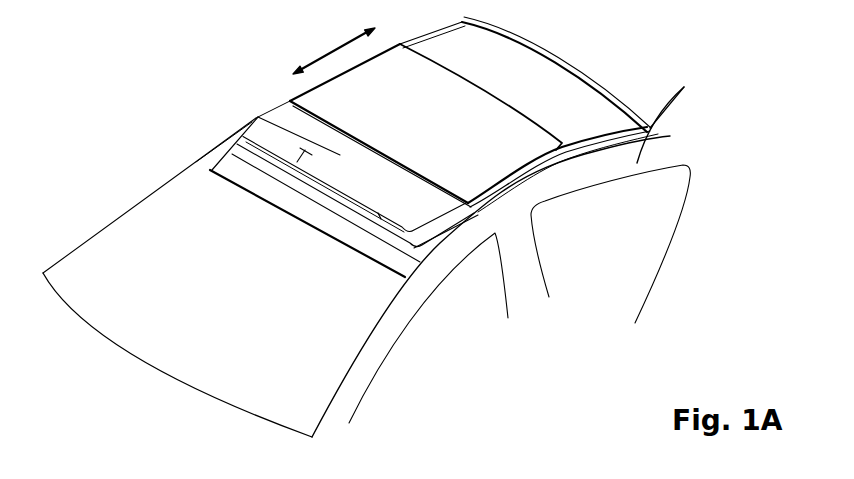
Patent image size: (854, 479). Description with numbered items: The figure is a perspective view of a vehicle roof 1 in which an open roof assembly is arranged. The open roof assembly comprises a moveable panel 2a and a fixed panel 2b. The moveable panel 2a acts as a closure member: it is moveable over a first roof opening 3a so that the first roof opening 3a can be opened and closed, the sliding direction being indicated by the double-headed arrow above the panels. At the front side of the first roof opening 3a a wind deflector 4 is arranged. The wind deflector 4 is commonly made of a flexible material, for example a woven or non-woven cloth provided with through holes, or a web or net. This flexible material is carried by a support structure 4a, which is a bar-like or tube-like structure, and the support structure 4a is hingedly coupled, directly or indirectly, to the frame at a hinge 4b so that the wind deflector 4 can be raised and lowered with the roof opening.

The vehicle roof 1 is at (686, 87).
The moveable panel 2a is at (440, 117).
The fixed panel 2b is at (549, 87).
The first roof opening 3a is at (300, 148).
The wind deflector 4 is at (250, 165).
The support structure 4a is at (380, 218).
The hinge 4b is at (250, 114).